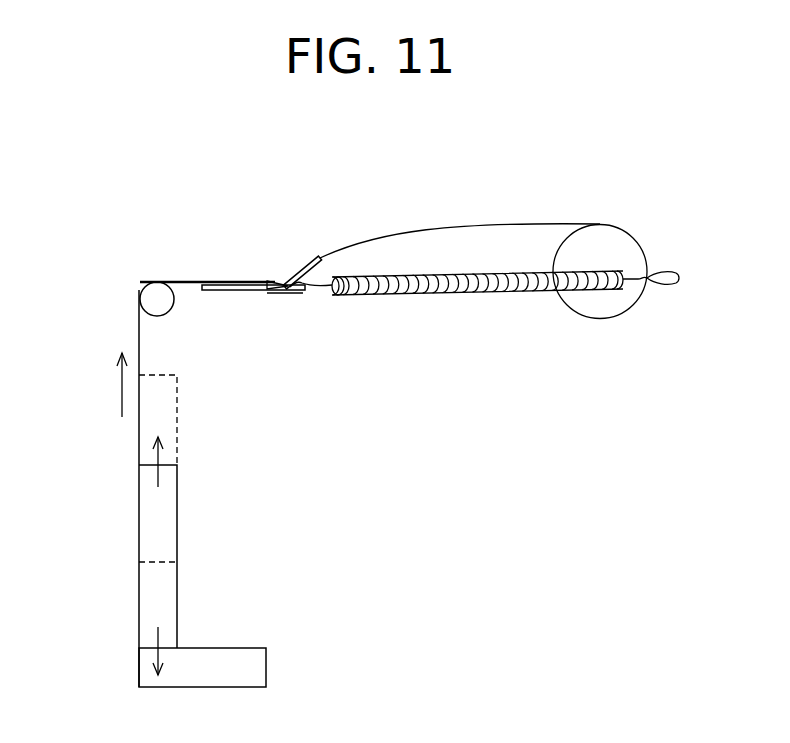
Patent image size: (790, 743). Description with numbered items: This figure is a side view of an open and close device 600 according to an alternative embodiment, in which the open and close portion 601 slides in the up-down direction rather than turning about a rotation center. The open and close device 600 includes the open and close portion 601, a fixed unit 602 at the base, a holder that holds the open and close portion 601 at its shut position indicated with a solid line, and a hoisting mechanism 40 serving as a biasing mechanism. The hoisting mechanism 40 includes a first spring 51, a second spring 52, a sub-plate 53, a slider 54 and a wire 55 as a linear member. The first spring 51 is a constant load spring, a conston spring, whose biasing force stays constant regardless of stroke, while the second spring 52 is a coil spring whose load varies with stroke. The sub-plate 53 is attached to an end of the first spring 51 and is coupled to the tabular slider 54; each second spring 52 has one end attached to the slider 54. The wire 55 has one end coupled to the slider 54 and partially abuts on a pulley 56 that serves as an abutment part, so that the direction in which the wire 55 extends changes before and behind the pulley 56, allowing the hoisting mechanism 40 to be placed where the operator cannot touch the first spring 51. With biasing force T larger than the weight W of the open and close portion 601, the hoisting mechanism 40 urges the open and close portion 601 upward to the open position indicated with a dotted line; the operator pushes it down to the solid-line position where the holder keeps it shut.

The hoisting mechanism 40 is at (425, 203).
The first spring 51 is at (636, 306).
The second spring 52 is at (476, 294).
The sub-plate 53 is at (301, 270).
The slider 54 is at (237, 291).
The wire 55 is at (183, 280).
The pulley 56 is at (165, 314).
The open and close device 600 is at (163, 424).
The open and close portion 601 is at (148, 590).
The fixed unit 602 is at (228, 660).